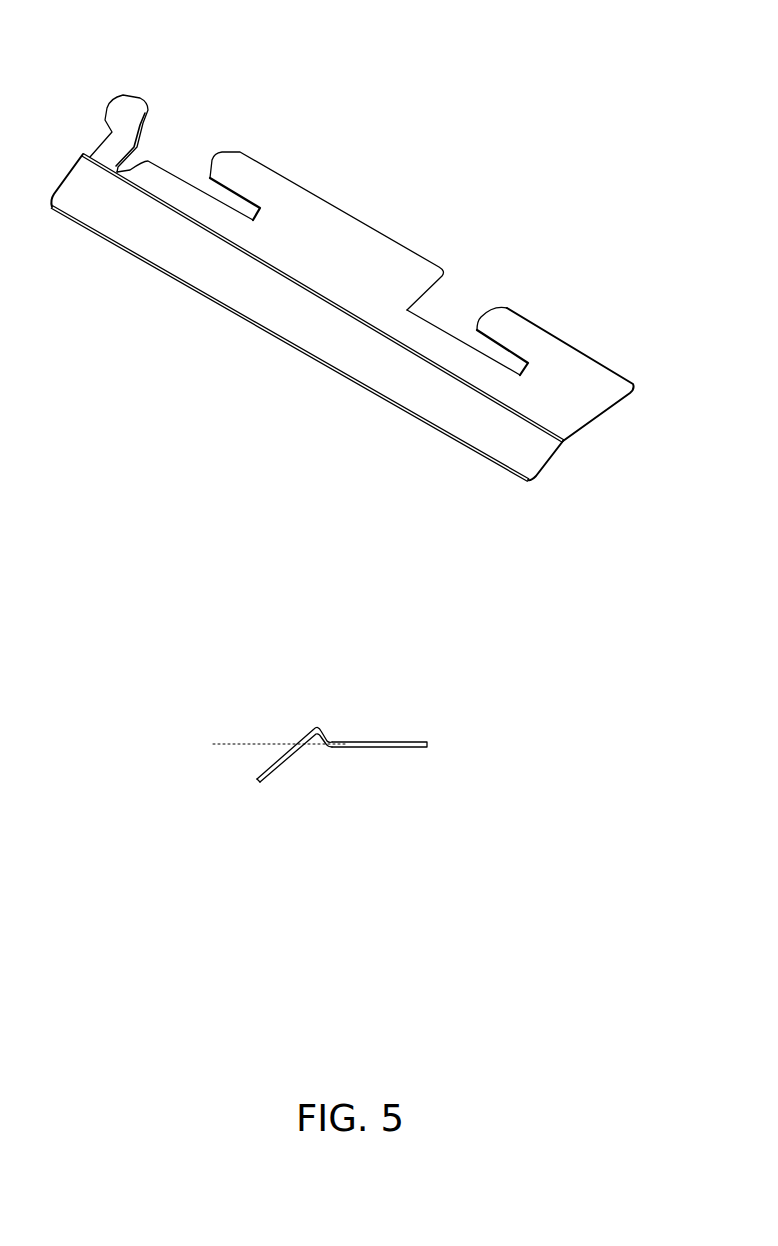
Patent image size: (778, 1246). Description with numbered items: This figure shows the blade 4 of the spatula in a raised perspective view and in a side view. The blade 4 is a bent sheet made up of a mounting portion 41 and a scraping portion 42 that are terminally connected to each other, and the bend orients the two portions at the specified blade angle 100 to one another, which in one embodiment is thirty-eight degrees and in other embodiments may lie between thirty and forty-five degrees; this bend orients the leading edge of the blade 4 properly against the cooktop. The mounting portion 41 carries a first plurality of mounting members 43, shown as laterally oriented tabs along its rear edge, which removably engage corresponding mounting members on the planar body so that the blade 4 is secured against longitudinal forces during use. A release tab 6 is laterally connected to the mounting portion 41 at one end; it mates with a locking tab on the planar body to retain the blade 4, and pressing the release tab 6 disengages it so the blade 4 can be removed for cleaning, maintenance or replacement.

The blade 4 is at (459, 157).
The release tab 6 is at (123, 102).
The mounting portion 41 is at (645, 421).
The scraping portion 42 is at (575, 494).
The first plurality of mounting members 43 is at (258, 188).
The specified blade angle 100 is at (260, 763).